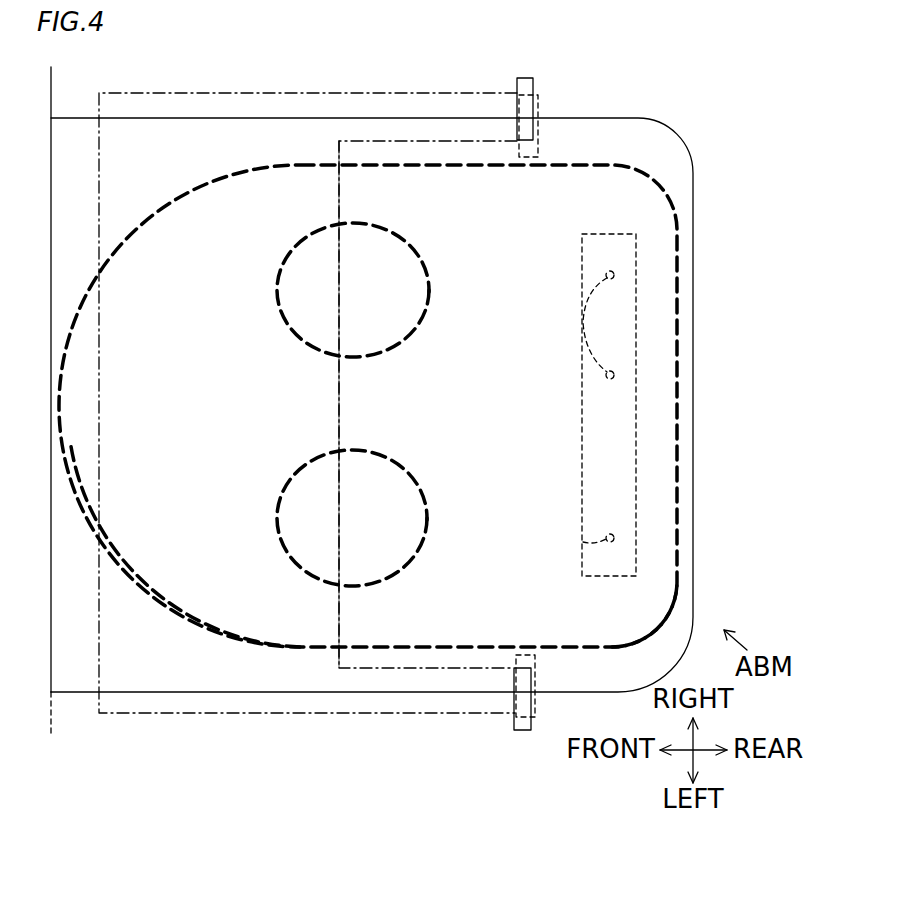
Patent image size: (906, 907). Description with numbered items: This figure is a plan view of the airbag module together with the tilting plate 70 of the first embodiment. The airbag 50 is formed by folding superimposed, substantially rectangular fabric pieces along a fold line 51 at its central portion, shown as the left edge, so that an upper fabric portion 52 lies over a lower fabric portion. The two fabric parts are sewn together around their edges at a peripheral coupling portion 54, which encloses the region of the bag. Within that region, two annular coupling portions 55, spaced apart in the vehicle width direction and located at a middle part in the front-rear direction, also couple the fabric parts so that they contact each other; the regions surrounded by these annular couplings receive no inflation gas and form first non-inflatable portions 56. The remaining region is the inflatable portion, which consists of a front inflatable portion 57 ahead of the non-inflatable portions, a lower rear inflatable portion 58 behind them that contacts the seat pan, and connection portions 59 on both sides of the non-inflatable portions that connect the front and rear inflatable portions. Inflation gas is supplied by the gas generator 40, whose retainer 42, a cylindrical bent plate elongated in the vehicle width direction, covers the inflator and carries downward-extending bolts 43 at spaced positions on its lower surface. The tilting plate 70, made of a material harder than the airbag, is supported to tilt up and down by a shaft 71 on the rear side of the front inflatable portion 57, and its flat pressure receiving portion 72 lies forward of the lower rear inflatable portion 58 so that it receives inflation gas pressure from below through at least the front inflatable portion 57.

The gas generator 40 is at (572, 405).
The retainer 42 is at (582, 433).
The bolt 43 is at (583, 338).
The airbag 50 is at (652, 120).
The fold line 51 is at (51, 735).
The upper fabric portion 52 is at (203, 132).
The peripheral coupling portion 54 is at (178, 200).
The annular coupling portion 55 is at (278, 291).
The first non-inflatable portion 56 is at (415, 292).
The front inflatable portion 57 is at (173, 592).
The lower rear inflatable portion 58 is at (548, 620).
The connection portion 59 is at (310, 180).
The tilting plate 70 is at (413, 404).
The shaft 71 is at (535, 80).
The pressure receiving portion 72 is at (341, 405).